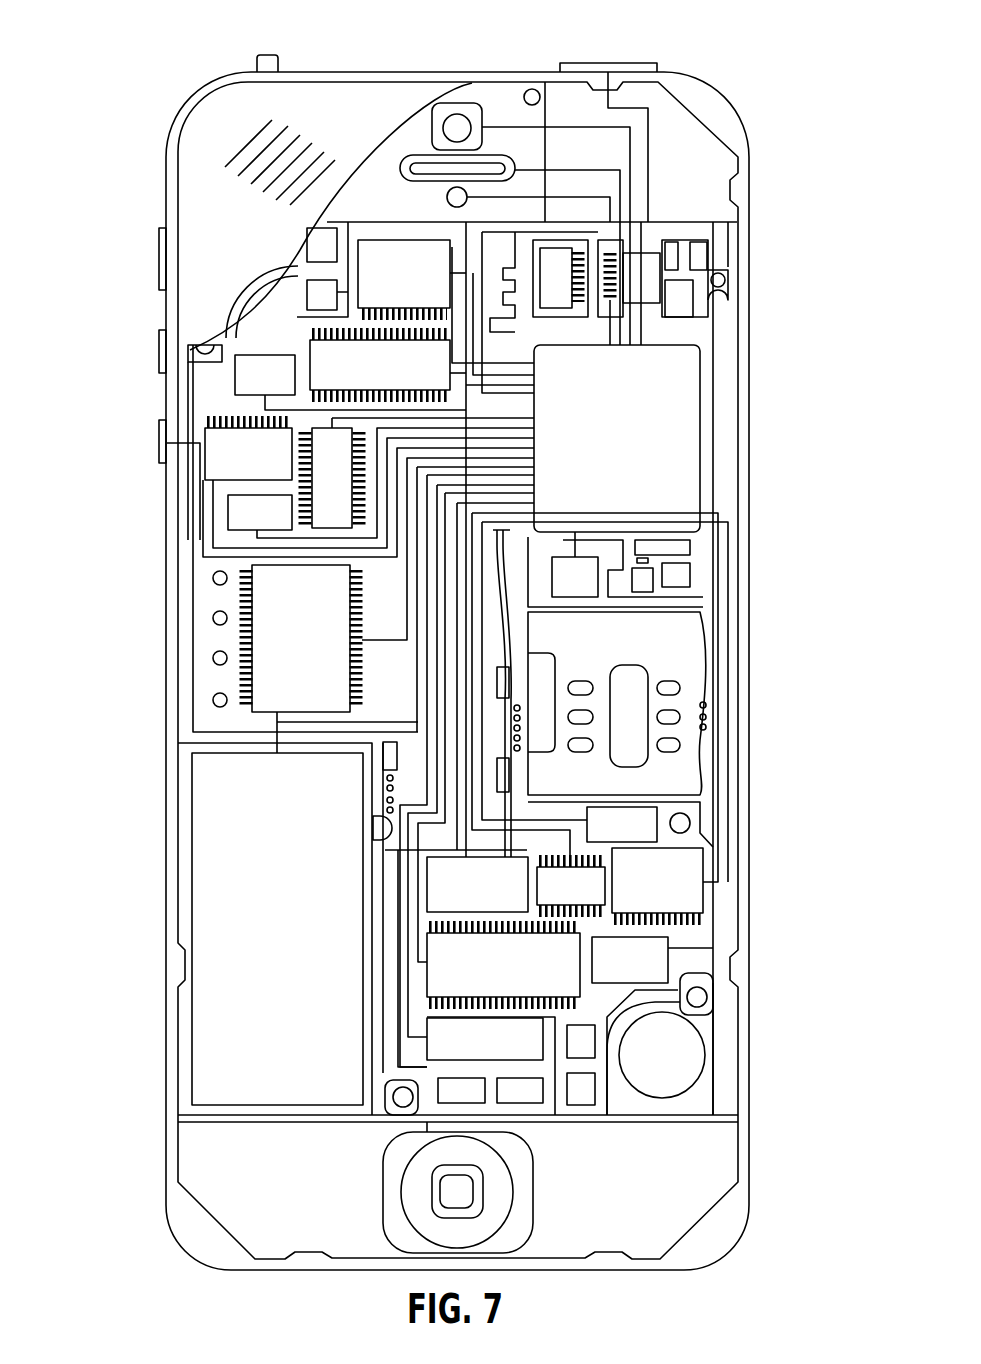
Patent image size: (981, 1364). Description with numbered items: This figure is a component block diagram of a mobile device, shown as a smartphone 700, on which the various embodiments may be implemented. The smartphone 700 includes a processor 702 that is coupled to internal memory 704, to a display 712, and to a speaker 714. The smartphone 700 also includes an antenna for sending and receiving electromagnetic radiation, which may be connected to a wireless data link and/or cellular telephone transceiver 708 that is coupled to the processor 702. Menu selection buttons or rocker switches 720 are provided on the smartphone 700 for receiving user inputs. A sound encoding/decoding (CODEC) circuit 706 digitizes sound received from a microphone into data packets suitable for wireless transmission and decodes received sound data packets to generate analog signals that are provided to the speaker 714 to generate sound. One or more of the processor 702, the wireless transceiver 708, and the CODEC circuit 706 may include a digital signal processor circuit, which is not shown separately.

The smartphone 700 is at (140, 92).
The processor 702 is at (617, 438).
The internal memory 704 is at (404, 277).
The sound encoding/decoding (CODEC) circuit 706 is at (380, 365).
The wireless data link and/or cellular telephone transceiver 708 is at (652, 253).
The display 712 is at (193, 183).
The speaker 714 is at (402, 158).
The menu selection buttons or rocker switches 720 is at (160, 253).